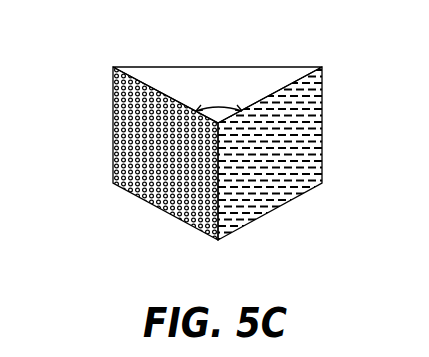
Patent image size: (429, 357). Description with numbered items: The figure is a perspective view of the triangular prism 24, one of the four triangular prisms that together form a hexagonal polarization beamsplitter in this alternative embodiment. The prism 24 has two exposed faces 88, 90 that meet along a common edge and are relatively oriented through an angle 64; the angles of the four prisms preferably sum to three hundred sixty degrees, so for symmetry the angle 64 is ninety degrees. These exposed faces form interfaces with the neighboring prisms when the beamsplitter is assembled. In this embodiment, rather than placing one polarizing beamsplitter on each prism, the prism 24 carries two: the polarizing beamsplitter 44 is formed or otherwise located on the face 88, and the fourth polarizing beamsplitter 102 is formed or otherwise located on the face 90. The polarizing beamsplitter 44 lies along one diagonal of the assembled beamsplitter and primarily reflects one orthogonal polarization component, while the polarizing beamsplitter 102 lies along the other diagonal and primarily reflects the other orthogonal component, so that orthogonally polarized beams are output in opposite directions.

The triangular prism 24 is at (266, 82).
The polarizing beamsplitter 44 is at (116, 167).
The angle 64 is at (210, 103).
The exposed face 88 is at (171, 213).
The exposed face 90 is at (257, 212).
The fourth polarizing beamsplitter 102 is at (323, 165).